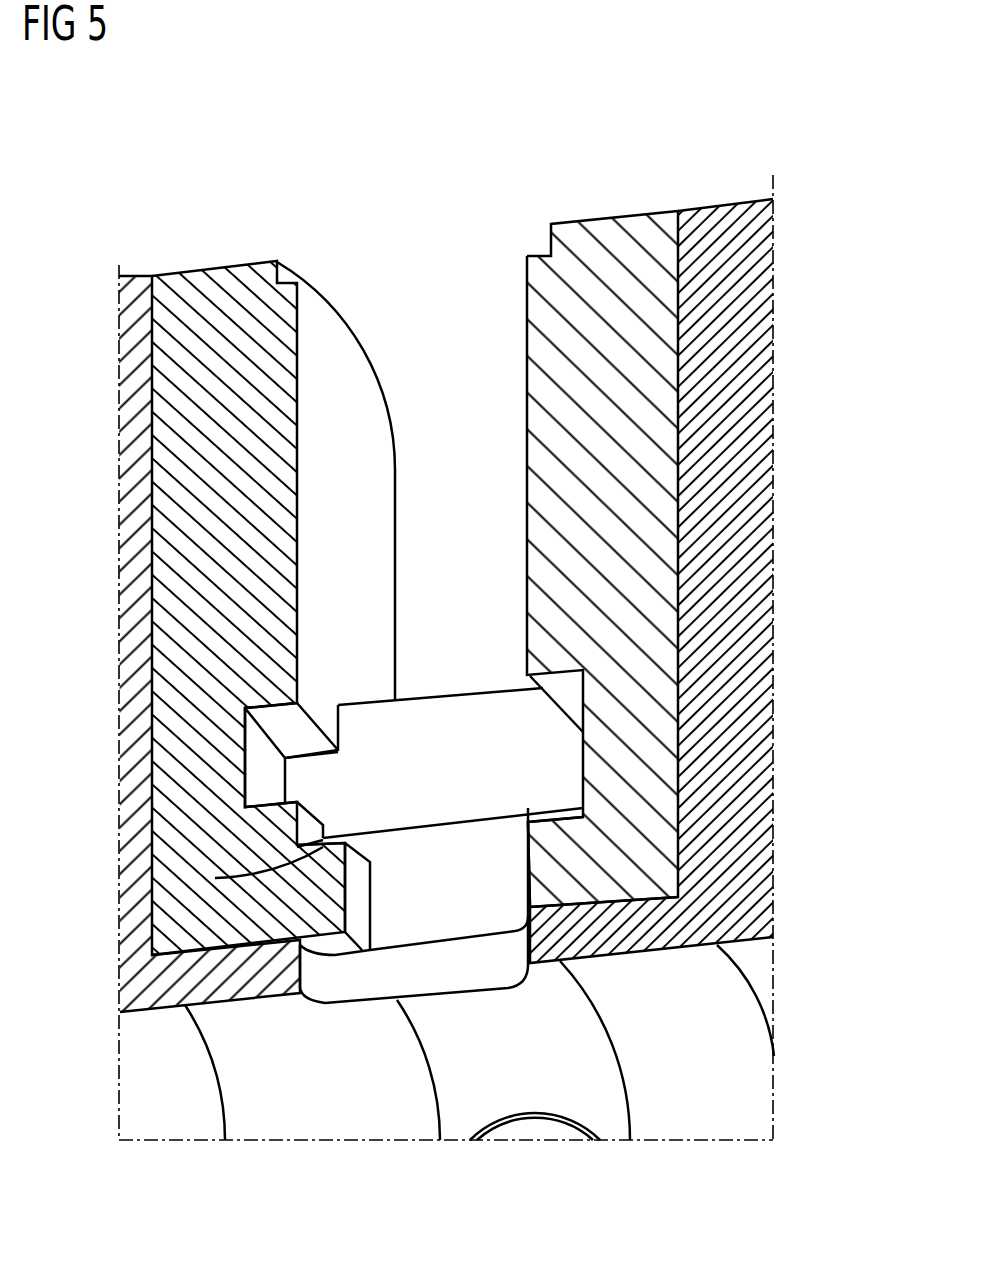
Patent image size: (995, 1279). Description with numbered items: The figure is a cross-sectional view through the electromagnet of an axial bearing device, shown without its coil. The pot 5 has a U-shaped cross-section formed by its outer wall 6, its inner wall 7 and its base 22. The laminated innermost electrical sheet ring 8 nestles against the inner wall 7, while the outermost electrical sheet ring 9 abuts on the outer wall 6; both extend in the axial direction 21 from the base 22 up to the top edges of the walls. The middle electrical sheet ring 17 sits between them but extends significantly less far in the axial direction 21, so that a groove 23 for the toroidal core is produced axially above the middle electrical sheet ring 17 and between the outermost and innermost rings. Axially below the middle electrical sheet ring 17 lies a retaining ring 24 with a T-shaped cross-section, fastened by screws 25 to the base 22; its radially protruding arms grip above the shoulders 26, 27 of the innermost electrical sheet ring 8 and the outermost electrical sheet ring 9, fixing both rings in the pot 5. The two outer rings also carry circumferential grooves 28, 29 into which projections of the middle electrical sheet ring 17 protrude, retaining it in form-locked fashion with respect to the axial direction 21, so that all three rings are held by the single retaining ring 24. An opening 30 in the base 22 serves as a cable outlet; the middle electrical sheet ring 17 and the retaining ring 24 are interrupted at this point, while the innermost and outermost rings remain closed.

The pot 5 is at (806, 982).
The outer wall 6 is at (765, 637).
The inner wall 7 is at (130, 532).
The innermost electrical sheet ring 8 is at (397, 510).
The outermost electrical sheet ring 9 is at (645, 707).
The middle electrical sheet ring 17 is at (462, 705).
The axial direction 21 is at (444, 165).
The base 22 is at (647, 960).
The groove 23 is at (475, 380).
The retaining ring 24 is at (461, 905).
The screws 25 is at (532, 1132).
The shoulder 26 is at (335, 853).
The shoulder 27 is at (563, 820).
The groove 28 is at (245, 767).
The groove 29 is at (585, 765).
The opening 30 is at (332, 990).